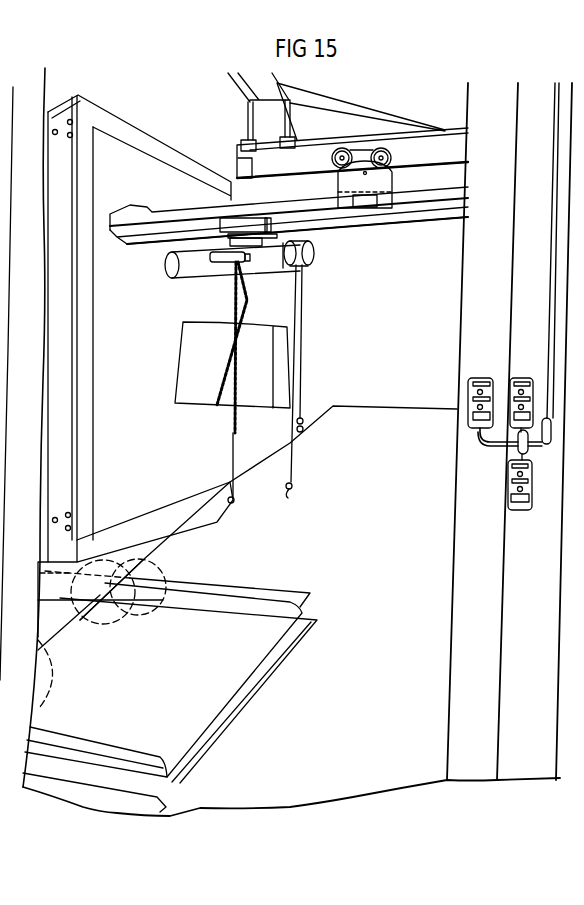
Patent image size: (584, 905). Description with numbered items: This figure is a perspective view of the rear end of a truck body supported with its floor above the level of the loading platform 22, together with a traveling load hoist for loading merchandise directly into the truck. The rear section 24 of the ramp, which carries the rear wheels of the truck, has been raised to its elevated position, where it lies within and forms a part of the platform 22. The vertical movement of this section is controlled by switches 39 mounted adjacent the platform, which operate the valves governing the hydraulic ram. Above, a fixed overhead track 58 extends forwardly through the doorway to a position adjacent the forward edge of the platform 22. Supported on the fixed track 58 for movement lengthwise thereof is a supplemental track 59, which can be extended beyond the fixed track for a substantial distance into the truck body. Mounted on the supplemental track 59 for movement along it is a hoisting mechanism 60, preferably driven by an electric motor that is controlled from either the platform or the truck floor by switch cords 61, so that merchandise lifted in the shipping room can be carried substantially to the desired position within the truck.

The overhead track 58 is at (418, 147).
The supplemental track 59 is at (402, 200).
The hoisting mechanism 60 is at (192, 267).
The switch cords 61 is at (292, 455).
The platform 22 is at (382, 414).
The switches 39 is at (515, 378).
The rear section 24 is at (243, 658).